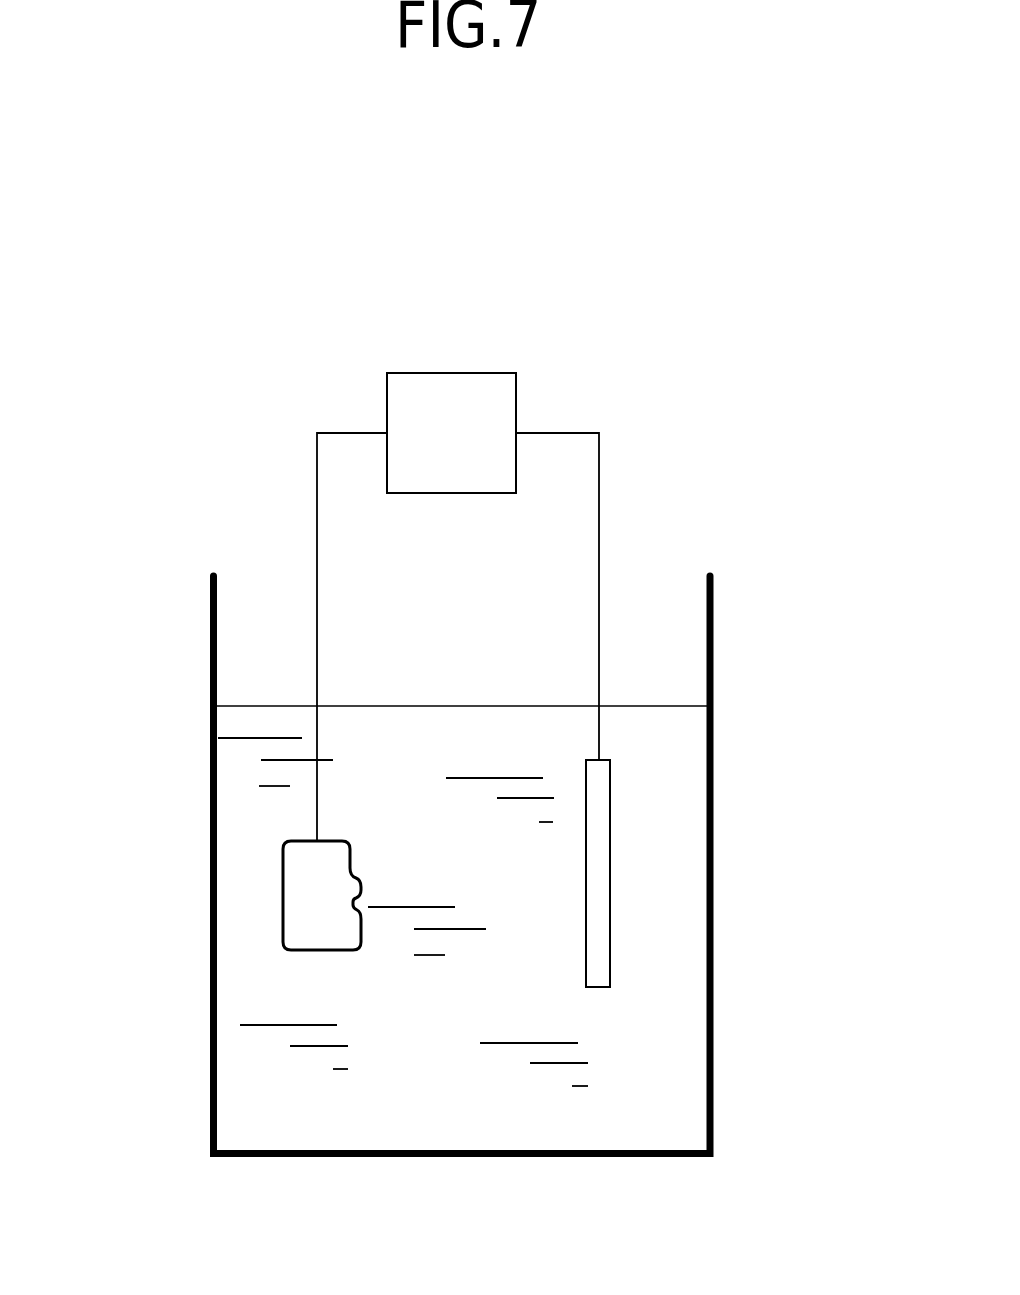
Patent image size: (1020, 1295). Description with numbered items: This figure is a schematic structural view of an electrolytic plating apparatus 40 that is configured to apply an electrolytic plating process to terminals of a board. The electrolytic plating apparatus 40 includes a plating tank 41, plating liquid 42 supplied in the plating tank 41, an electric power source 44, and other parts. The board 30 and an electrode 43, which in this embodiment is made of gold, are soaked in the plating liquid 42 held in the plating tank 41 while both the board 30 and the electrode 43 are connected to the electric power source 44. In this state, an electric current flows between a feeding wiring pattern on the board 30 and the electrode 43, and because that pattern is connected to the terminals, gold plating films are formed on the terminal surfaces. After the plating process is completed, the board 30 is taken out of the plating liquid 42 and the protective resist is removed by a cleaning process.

The board 30 is at (308, 899).
The electrolytic plating apparatus 40 is at (652, 246).
The plating tank 41 is at (724, 793).
The plating liquid 42 is at (660, 1040).
The electrode 43 is at (602, 934).
The electric power source 44 is at (516, 388).